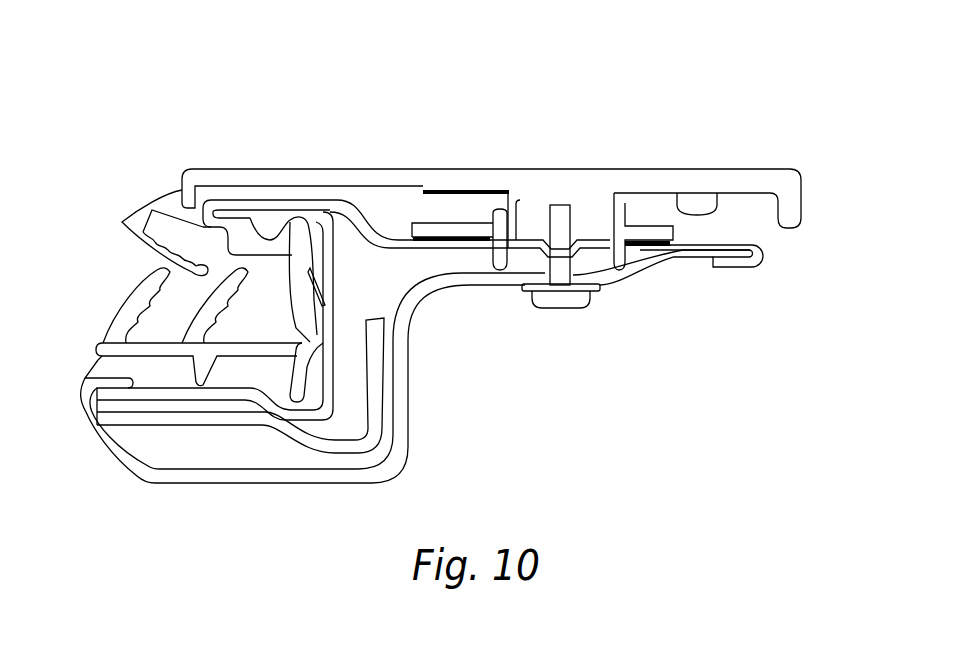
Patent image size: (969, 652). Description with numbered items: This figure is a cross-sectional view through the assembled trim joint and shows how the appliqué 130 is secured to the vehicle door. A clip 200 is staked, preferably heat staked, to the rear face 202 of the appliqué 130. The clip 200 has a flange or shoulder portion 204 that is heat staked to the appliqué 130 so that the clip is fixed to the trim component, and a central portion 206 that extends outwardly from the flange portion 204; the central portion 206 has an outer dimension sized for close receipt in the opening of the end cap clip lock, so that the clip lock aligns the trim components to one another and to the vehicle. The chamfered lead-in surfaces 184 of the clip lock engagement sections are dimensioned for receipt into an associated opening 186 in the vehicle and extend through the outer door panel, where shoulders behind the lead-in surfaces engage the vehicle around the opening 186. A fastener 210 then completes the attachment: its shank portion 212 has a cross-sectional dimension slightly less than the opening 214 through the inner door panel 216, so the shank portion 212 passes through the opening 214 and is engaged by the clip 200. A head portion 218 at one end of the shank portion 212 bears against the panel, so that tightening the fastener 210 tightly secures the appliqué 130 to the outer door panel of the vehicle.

The appliqué 130 is at (664, 182).
The clip 200 is at (566, 169).
The central portion 206 is at (590, 168).
The rear face 202 is at (715, 192).
The flange portion 204 is at (457, 208).
The shank portion 212 is at (560, 221).
The opening 214 is at (622, 270).
The chamfered lead-in surfaces 184 is at (494, 211).
The head portion 218 is at (555, 298).
The fastener 210 is at (575, 313).
The opening 186 is at (638, 262).
The inner door panel 216 is at (690, 258).